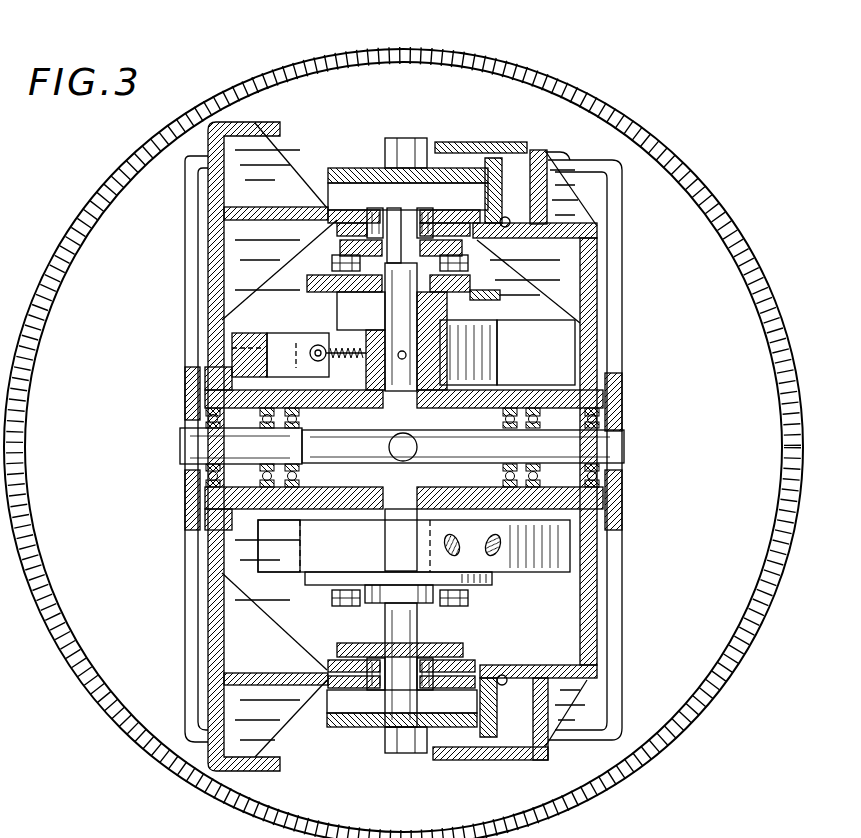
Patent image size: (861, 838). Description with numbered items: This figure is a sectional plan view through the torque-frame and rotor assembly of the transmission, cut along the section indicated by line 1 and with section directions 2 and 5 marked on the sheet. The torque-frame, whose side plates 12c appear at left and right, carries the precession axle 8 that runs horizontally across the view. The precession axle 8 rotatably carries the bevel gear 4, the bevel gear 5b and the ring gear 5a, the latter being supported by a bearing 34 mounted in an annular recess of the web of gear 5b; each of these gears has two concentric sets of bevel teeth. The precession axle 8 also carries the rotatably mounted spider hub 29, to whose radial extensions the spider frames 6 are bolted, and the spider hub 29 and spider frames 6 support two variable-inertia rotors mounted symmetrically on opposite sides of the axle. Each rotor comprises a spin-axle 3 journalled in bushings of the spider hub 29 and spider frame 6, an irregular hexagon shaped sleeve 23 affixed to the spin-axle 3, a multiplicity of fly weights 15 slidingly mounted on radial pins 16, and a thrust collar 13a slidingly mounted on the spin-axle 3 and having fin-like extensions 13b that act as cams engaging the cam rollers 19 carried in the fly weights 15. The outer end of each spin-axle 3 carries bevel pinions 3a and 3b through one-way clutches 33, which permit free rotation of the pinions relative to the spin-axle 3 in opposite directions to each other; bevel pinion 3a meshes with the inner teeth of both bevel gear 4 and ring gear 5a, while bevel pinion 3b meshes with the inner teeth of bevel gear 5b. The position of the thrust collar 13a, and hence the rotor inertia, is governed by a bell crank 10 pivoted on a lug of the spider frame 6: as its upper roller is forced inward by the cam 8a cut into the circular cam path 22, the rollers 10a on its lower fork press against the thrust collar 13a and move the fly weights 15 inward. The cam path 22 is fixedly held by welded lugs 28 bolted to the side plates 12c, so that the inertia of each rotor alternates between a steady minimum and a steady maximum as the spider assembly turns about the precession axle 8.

The section line 1- 1 is at (160, 445).
The output shaft 2 is at (368, 80).
The spin-axle 3 is at (420, 622).
The bevel pinion 3a is at (268, 717).
The bevel pinion 3b is at (337, 236).
The bevel gear 4 is at (255, 123).
The section line 5- 5 is at (300, 518).
The ring gear 5a is at (505, 160).
The bevel gear 5b is at (490, 148).
The spider frame 6 is at (352, 246).
The precession axle 8 is at (350, 460).
The cam 8a is at (385, 735).
The bell crank 10 is at (334, 598).
The rollers 10a is at (472, 288).
The side plates 12c is at (190, 342).
The thrust collar 13a is at (337, 240).
The fin-like extensions 13b is at (325, 300).
The fly weights 15 is at (386, 560).
The radial pins 16 is at (493, 548).
The cam rollers 19 is at (308, 360).
The cam path 22 is at (356, 168).
The sleeve 23 is at (378, 338).
The welded lugs 28 is at (402, 138).
The spider hub 29 is at (342, 508).
The one-way clutches 33 is at (376, 665).
The bearing 34 is at (510, 206).